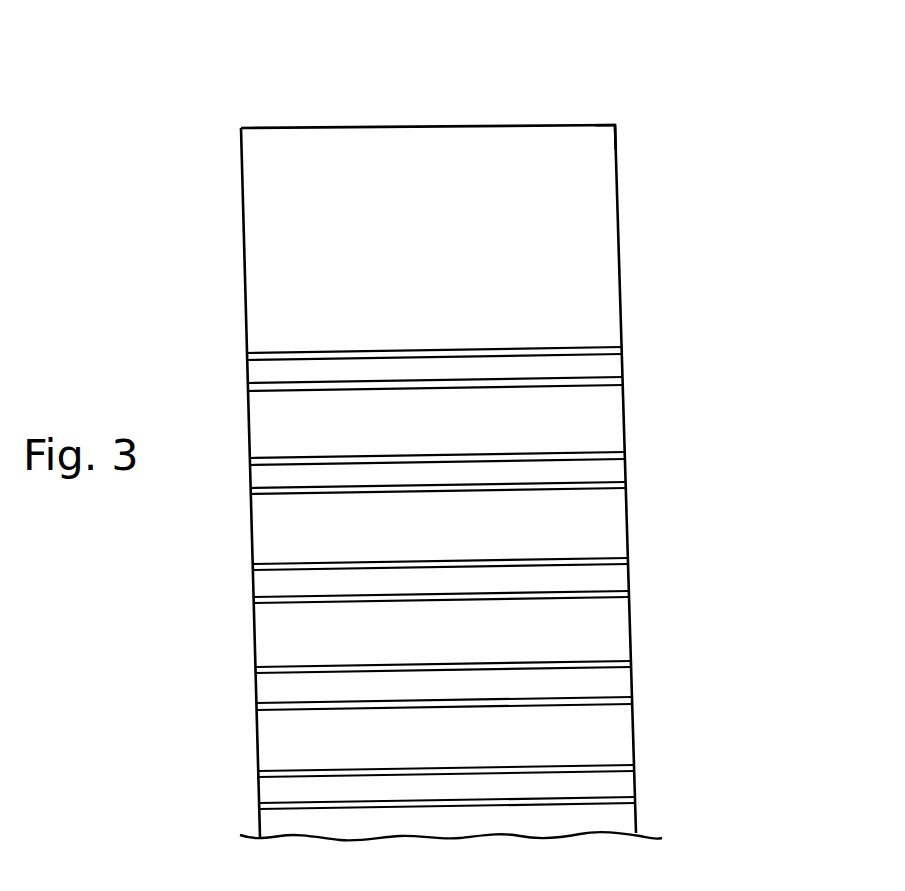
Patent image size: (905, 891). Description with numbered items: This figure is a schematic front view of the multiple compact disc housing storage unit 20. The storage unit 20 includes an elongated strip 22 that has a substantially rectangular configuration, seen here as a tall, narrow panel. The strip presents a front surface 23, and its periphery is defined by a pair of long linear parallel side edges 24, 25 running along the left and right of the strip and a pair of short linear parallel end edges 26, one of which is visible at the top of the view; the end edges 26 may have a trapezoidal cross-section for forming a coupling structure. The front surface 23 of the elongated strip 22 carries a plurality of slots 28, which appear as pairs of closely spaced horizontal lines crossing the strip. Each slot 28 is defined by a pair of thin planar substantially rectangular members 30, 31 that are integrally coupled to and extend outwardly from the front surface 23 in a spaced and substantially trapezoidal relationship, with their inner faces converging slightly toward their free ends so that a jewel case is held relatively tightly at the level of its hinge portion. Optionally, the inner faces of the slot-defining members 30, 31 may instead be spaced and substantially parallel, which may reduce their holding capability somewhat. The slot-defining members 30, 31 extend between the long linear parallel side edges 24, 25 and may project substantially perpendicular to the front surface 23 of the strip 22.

The multiple compact disc housing storage unit 20 is at (642, 67).
The elongated strip 22 is at (582, 220).
The front surface 23 is at (600, 150).
The long linear parallel side edge 24 is at (247, 297).
The long linear parallel side edge 25 is at (620, 258).
The short linear parallel end edge 26 is at (518, 127).
The slot 28 is at (603, 363).
The slot-defining member 30 is at (598, 448).
The slot-defining member 31 is at (603, 482).